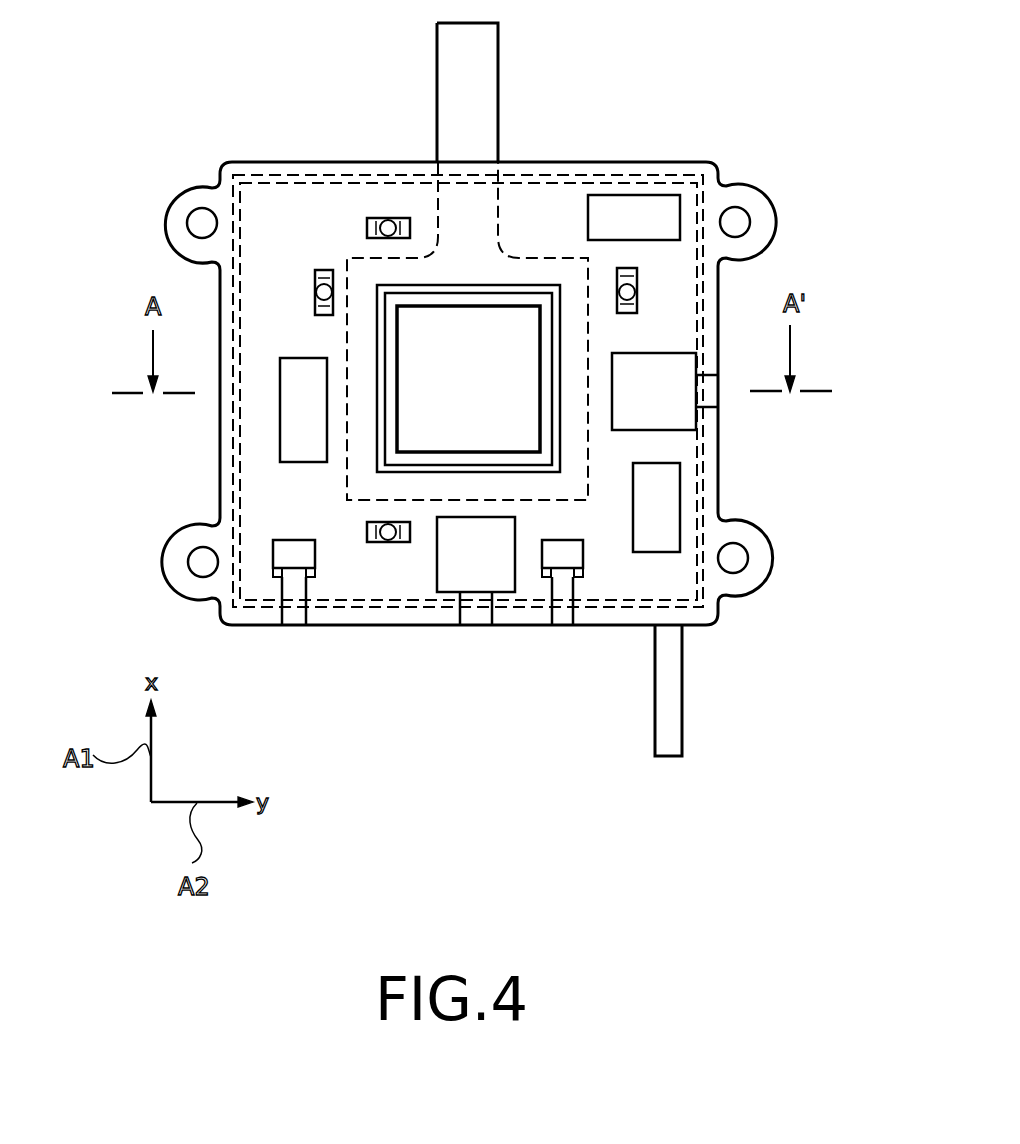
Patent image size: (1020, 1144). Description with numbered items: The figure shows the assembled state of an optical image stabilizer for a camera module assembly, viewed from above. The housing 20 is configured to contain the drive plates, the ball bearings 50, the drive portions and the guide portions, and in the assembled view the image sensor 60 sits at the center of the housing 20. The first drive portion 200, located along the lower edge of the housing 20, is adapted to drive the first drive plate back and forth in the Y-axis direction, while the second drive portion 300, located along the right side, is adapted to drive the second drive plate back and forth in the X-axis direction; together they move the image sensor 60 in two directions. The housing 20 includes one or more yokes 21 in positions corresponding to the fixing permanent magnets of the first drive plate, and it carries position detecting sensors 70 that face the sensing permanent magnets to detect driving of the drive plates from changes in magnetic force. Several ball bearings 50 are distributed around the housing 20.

The housing 20 is at (590, 162).
The yoke 21 is at (655, 205).
The ball bearing 50 is at (323, 285).
The image sensor 60 is at (408, 402).
The position detecting sensor 70 is at (283, 553).
The first drive portion 200 is at (442, 557).
The second drive portion 300 is at (680, 413).